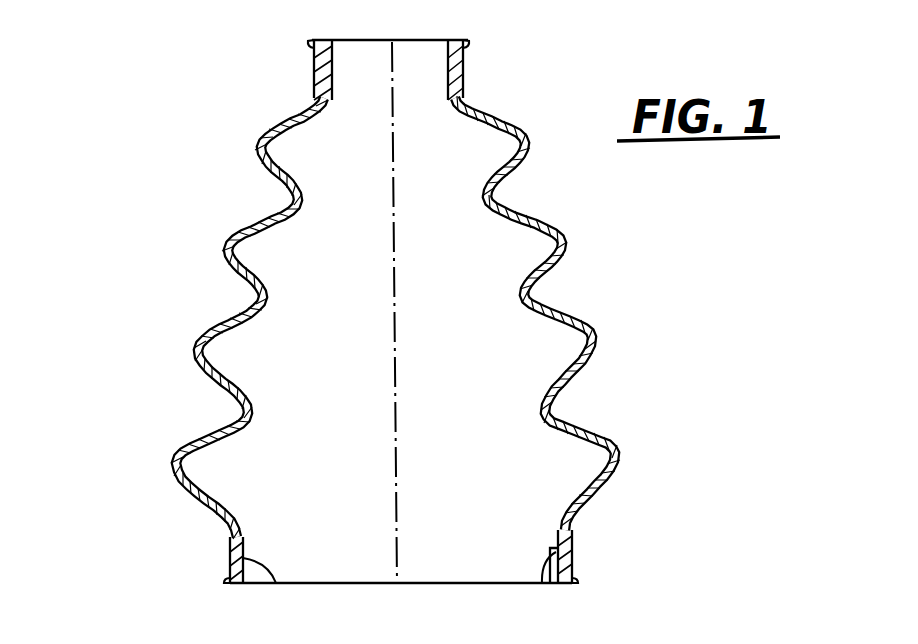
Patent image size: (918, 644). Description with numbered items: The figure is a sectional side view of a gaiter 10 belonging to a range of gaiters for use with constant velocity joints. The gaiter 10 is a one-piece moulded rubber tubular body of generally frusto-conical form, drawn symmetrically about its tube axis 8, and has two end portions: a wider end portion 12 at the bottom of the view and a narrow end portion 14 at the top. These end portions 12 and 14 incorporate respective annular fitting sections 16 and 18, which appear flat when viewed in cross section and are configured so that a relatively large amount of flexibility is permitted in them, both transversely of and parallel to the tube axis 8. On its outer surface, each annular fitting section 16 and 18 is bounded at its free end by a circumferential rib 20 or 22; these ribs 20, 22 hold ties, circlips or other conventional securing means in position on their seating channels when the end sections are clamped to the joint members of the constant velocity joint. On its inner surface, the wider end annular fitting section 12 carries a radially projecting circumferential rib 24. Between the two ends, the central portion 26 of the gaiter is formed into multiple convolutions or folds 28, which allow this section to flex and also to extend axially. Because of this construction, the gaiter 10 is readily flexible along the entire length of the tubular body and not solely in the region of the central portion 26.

The tube axis 8 is at (396, 362).
The gaiter 10 is at (665, 362).
The wider end portion 12 is at (373, 586).
The narrow end portion 14 is at (422, 38).
The annular fitting section 16 is at (230, 565).
The annular fitting section 18 is at (318, 80).
The circumferential rib 20 is at (228, 583).
The circumferential rib 22 is at (313, 42).
The radially projecting circumferential rib 24 is at (278, 590).
The central portion 26 is at (172, 486).
The convolutions or folds 28 is at (586, 316).